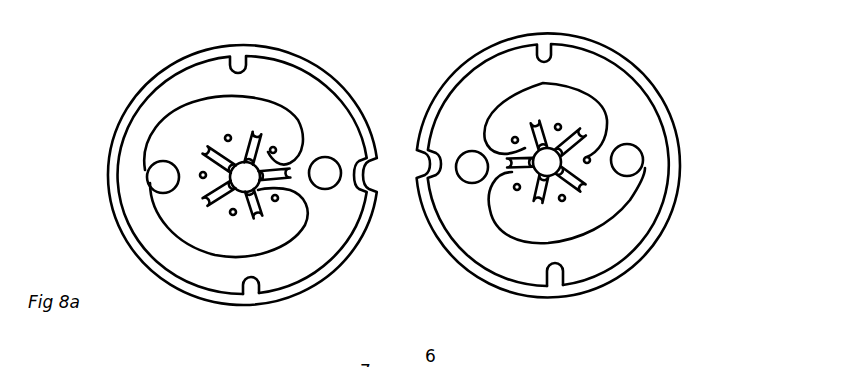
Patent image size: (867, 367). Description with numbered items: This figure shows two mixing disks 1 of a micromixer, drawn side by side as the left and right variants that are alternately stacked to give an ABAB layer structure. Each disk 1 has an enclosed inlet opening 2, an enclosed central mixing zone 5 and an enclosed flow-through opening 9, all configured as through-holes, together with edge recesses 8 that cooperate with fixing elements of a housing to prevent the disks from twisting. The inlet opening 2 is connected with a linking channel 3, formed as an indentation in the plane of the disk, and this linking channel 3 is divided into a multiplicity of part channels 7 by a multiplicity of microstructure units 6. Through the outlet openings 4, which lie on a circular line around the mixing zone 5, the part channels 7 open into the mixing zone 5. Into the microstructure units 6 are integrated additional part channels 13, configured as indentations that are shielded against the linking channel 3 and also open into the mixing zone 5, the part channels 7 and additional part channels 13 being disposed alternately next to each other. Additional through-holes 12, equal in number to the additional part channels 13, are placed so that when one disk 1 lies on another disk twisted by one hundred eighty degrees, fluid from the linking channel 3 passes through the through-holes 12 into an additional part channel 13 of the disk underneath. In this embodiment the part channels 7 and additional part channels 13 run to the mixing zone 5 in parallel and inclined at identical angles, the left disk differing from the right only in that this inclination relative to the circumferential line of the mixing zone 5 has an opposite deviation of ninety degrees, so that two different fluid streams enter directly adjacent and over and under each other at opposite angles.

The disk 1 is at (497, 70).
The inlet opening 2 is at (163, 170).
The linking channel 3 is at (280, 117).
The outlet openings 4 is at (244, 163).
The mixing zone 5 is at (547, 150).
The microstructure units 6 is at (505, 200).
The part channels 7 is at (232, 172).
The recesses 8 is at (250, 300).
The flow-through opening 9 is at (472, 167).
The through-holes 12 is at (517, 190).
The additional part channels 13 is at (210, 204).